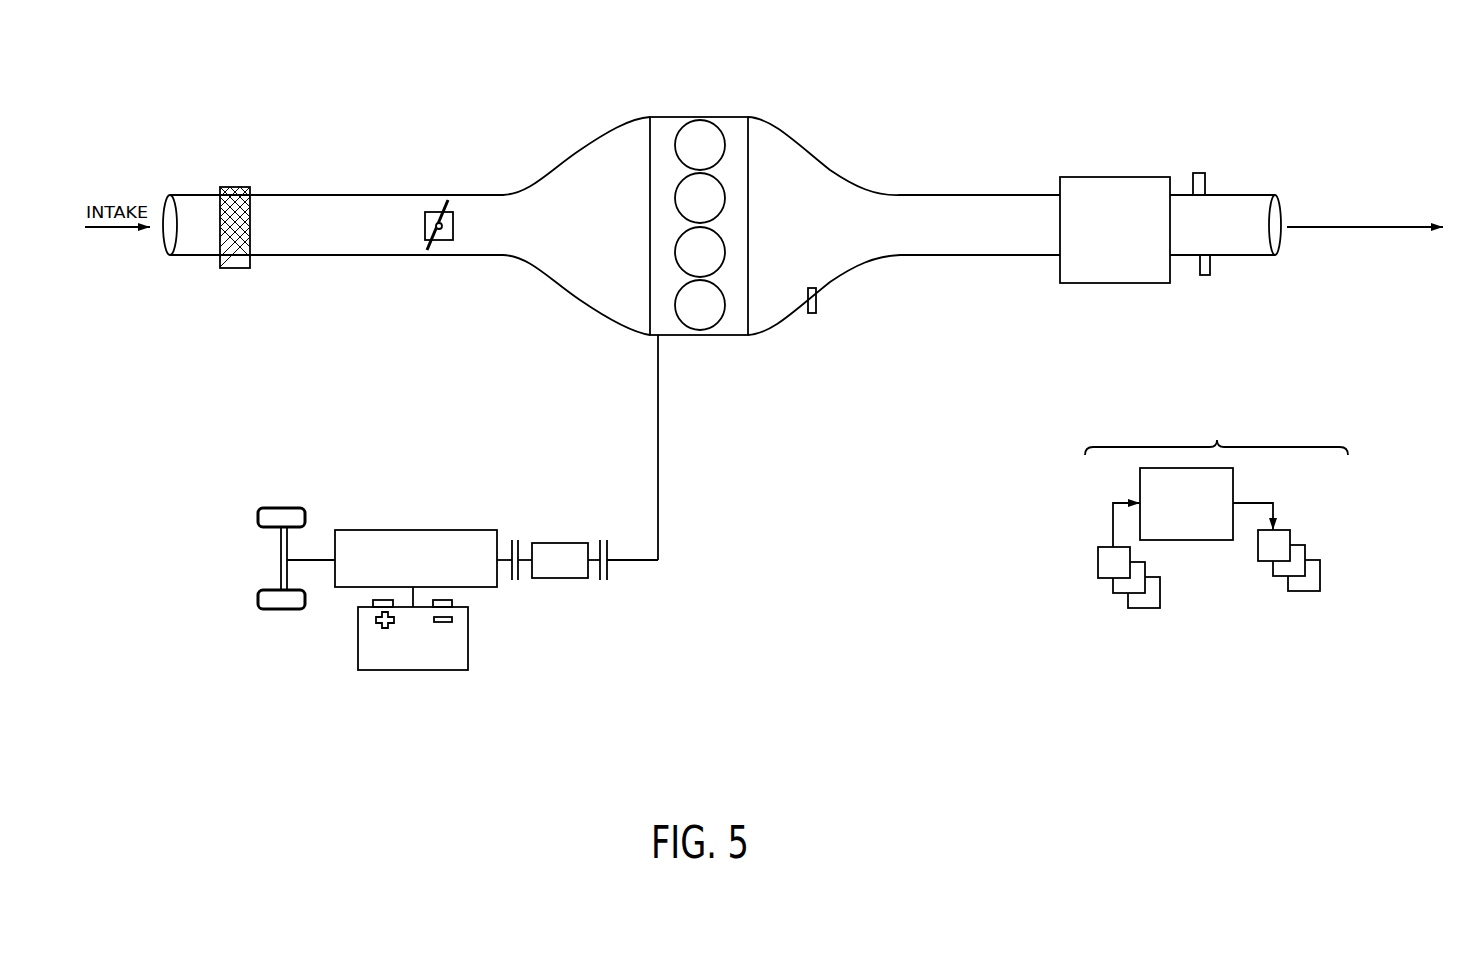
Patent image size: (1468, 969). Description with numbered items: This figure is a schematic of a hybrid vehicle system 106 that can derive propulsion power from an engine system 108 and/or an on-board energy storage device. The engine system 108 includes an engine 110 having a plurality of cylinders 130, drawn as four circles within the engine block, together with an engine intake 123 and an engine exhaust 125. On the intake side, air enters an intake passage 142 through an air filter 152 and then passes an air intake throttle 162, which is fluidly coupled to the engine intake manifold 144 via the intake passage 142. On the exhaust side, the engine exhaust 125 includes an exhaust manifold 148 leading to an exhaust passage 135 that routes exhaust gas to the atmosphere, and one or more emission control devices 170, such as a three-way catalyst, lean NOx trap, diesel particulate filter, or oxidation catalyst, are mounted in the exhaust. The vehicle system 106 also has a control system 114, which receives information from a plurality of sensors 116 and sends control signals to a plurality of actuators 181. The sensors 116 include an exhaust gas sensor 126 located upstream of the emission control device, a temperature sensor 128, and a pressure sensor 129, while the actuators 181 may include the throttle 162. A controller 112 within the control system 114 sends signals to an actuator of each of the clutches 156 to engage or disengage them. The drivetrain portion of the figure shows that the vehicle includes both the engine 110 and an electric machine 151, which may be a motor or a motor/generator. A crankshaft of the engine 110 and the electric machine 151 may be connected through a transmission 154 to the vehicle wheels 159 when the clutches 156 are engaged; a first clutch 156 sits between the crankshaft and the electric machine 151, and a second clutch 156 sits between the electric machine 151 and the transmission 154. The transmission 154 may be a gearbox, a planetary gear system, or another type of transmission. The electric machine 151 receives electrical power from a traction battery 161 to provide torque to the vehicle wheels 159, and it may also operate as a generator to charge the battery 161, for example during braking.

The hybrid vehicle system 106 is at (188, 97).
The engine system 108 is at (1305, 93).
The engine 110 is at (748, 207).
The controller 112 is at (1186, 504).
The control system 114 is at (1216, 532).
The sensors 116 is at (1085, 612).
The engine intake 123 is at (577, 150).
The engine exhaust 125 is at (863, 157).
The exhaust gas sensor 126 is at (816, 292).
The temperature sensor 128 is at (1207, 275).
The pressure sensor 129 is at (1200, 173).
The cylinders 130 is at (723, 137).
The exhaust passage 135 is at (1252, 195).
The intake passage 142 is at (197, 257).
The engine intake manifold 144 is at (594, 238).
The exhaust manifold 148 is at (814, 238).
The electric machine 151 is at (560, 580).
The air filter 152 is at (234, 186).
The transmission 154 is at (357, 589).
The clutches 156 is at (518, 545).
The vehicle wheels 159 is at (280, 610).
The traction battery 161 is at (420, 672).
The air intake throttle 162 is at (453, 229).
The emission control devices 170 is at (1105, 177).
The actuators 181 is at (1248, 594).